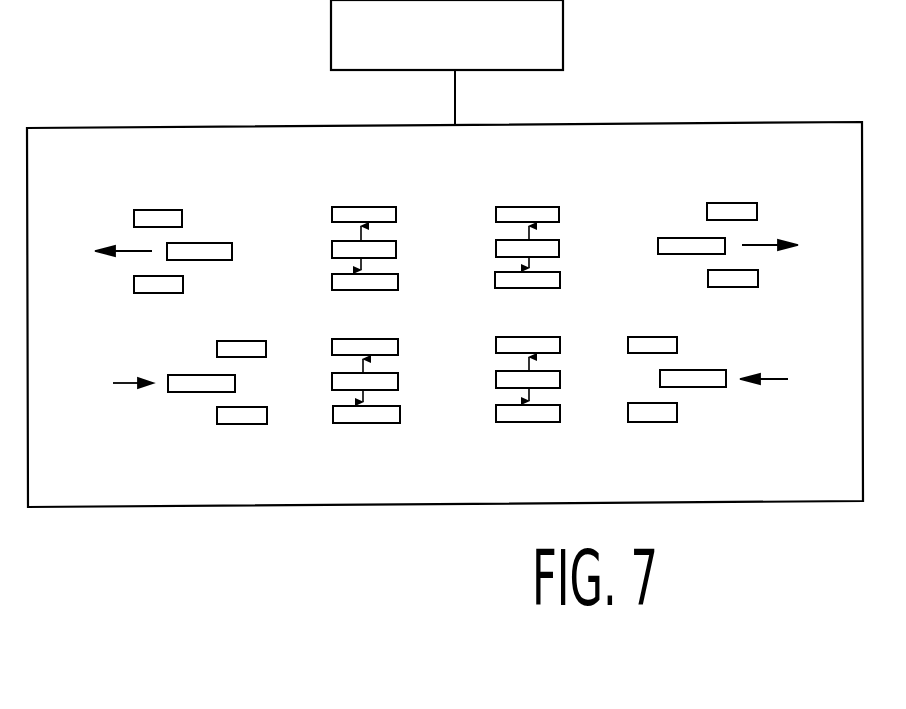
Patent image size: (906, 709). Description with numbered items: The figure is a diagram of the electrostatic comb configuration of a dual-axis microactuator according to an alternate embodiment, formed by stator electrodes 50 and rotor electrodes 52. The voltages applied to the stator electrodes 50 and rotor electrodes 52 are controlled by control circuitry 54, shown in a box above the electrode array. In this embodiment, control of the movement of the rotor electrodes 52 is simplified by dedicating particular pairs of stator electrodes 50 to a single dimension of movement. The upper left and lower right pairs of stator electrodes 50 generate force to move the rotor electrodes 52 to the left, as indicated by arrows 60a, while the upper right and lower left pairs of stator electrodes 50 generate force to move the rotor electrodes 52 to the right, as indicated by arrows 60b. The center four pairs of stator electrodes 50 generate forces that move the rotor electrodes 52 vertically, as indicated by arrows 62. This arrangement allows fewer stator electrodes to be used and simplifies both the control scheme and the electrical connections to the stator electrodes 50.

The control circuitry 54 is at (563, 22).
The stator electrodes 50 is at (332, 210).
The rotor electrodes 52 is at (332, 248).
The arrows 62 is at (512, 229).
The arrows 60a is at (130, 251).
The arrows 60b is at (768, 245).